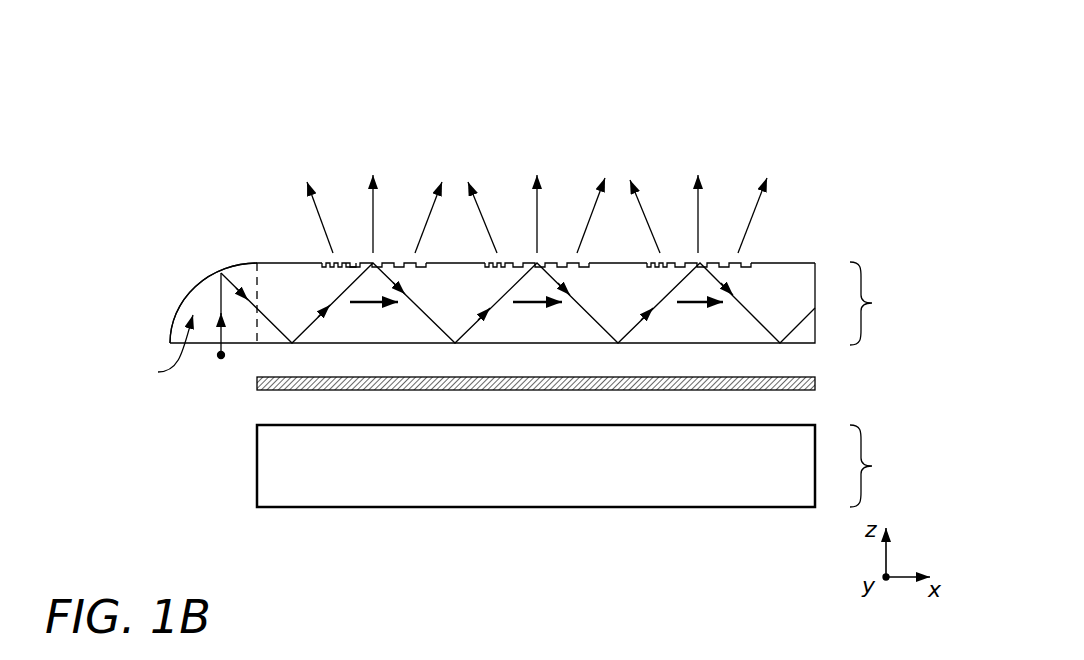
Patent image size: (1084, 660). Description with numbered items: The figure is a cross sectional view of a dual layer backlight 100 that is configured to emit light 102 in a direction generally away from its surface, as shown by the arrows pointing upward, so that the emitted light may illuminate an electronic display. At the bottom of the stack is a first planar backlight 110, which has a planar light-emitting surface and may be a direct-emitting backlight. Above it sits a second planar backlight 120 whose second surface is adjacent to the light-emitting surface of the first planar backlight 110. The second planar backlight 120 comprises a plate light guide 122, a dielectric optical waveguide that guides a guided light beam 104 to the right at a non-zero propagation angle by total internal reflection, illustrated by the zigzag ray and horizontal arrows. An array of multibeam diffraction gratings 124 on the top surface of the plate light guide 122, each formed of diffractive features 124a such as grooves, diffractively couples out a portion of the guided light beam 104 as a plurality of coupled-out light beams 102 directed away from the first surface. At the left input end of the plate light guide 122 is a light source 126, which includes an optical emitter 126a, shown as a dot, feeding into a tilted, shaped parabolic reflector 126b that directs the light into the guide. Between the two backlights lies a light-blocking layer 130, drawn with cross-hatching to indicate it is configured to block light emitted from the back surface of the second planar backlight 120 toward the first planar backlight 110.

The dual layer backlight 100 is at (508, 267).
The emitted light 102 is at (793, 193).
The guided light beam 104 is at (642, 308).
The first planar backlight 110 is at (598, 466).
The second planar backlight 120 is at (498, 264).
The plate light guide 122 is at (792, 262).
The multibeam diffraction grating 124 is at (327, 257).
The diffractive feature 124a is at (353, 257).
The light source 126 is at (175, 285).
The optical emitter 126a is at (221, 357).
The tilted, shaped parabolic reflector 126b is at (136, 352).
The light-blocking layer 130 is at (815, 388).